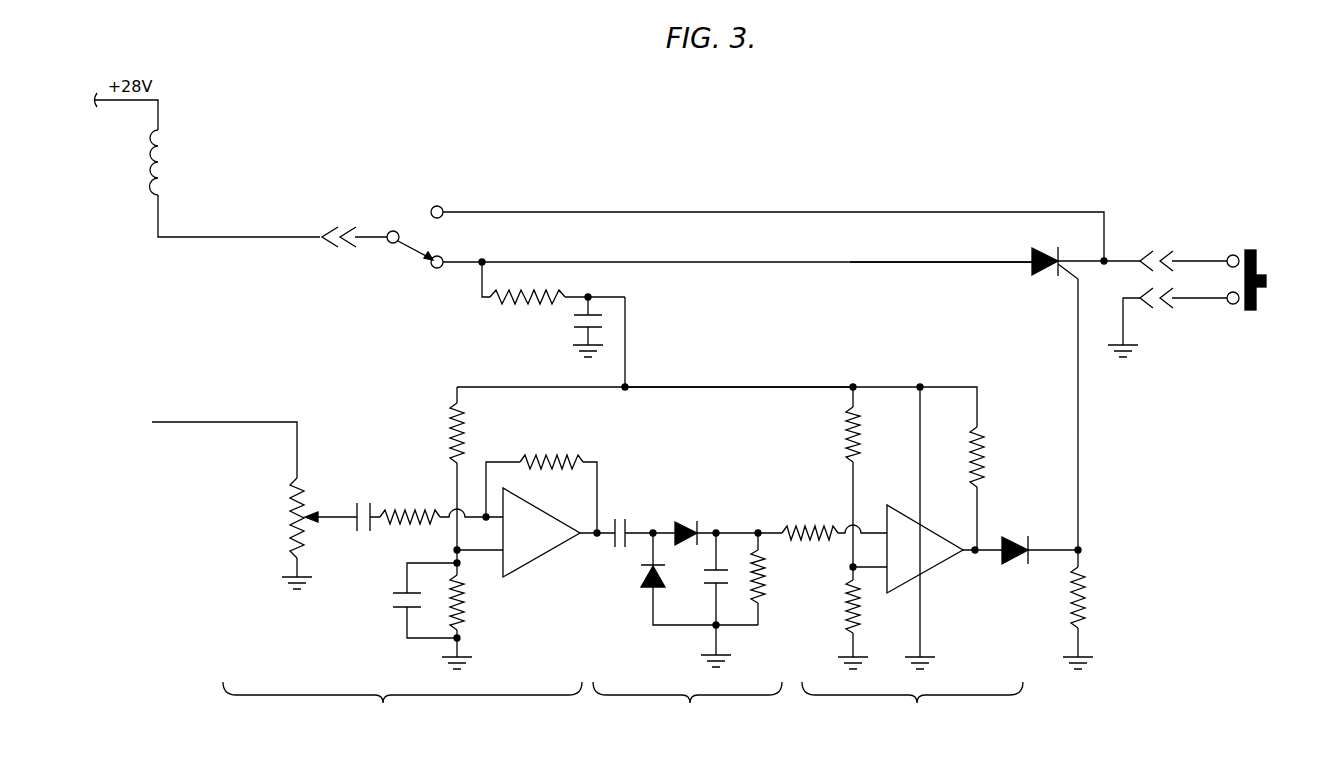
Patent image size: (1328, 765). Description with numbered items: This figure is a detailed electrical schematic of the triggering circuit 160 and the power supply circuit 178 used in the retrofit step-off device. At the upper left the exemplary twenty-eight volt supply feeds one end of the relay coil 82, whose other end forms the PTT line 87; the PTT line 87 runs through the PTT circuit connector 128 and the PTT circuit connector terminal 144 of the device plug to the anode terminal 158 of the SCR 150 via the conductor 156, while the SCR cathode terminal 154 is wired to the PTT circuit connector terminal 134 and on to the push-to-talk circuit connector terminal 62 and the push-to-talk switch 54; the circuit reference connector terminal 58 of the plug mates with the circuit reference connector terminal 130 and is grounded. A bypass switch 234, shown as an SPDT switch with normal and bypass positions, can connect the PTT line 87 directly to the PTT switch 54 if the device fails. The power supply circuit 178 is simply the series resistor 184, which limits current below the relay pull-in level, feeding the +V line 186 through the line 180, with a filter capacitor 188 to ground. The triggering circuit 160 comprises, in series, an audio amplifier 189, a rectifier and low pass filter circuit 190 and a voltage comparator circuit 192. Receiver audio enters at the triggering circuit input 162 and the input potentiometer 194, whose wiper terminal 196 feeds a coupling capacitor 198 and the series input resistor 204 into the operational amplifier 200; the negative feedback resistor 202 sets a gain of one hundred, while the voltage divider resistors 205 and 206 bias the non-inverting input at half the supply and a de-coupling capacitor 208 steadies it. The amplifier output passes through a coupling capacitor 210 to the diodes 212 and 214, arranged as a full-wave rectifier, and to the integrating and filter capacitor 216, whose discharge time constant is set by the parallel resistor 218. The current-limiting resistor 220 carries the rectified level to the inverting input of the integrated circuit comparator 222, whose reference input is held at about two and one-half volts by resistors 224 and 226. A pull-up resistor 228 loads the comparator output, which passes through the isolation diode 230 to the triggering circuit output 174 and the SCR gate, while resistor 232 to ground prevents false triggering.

The push-to-talk switch 54 is at (1294, 251).
The circuit reference connector terminal 58 is at (1165, 318).
The push-to-talk circuit connector terminal 62 is at (1165, 252).
The relay coil 82 is at (167, 140).
The PTT line 87 is at (168, 243).
The PTT circuit connector 128 is at (329, 250).
The circuit reference connector terminal 130 is at (1147, 335).
The PTT circuit connector terminal 134 is at (1147, 250).
The PTT circuit connector terminal 144 is at (349, 255).
The SCR 150 is at (1028, 252).
The SCR cathode terminal 154 is at (1081, 258).
The conductor 156 is at (1071, 286).
The thyristor anode terminal 158 is at (980, 259).
The triggering circuit 160 is at (1032, 368).
The triggering circuit input 162 is at (248, 420).
The triggering circuit output 174 is at (1082, 478).
The power supply circuit 178 is at (742, 318).
The line 180 is at (626, 333).
The resistor 184 is at (500, 305).
The +V line 186 is at (697, 385).
The filter capacitor 188 is at (575, 330).
The audio amplifier 189 is at (383, 704).
The rectifier and low pass filter circuit 190 is at (690, 704).
The voltage comparator circuit 192 is at (917, 704).
The input potentiometer 194 is at (290, 504).
The wiper terminal 196 is at (330, 516).
The coupling capacitor 198 is at (371, 505).
The operational amplifier 200 is at (556, 552).
The negative feedback resistor 202 is at (570, 458).
The series input resistor 204 is at (400, 512).
The voltage divider resistor 205 is at (452, 420).
The voltage divider resistor 206 is at (465, 626).
The de-coupling capacitor 208 is at (399, 616).
The coupling capacitor 210 is at (627, 526).
The diode 212 is at (688, 526).
The diode 214 is at (646, 590).
The integrating and filter capacitor 216 is at (709, 588).
The resistor 218 is at (766, 597).
The current-limiting resistor 220 is at (800, 526).
The integrated circuit comparator 222 is at (943, 570).
The resistor 224 is at (846, 437).
The resistor 226 is at (846, 637).
The pull-up resistor 228 is at (986, 441).
The isolation diode 230 is at (1021, 565).
The resistor 232 is at (1090, 575).
The bypass switch 234 is at (480, 189).